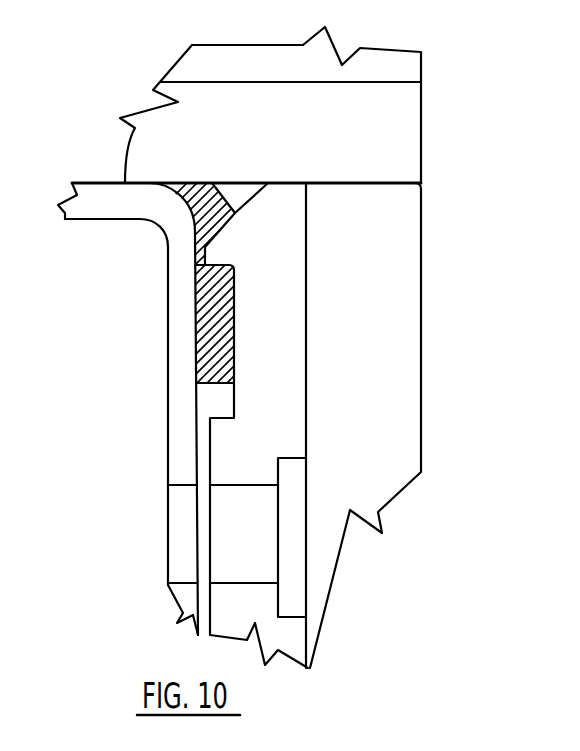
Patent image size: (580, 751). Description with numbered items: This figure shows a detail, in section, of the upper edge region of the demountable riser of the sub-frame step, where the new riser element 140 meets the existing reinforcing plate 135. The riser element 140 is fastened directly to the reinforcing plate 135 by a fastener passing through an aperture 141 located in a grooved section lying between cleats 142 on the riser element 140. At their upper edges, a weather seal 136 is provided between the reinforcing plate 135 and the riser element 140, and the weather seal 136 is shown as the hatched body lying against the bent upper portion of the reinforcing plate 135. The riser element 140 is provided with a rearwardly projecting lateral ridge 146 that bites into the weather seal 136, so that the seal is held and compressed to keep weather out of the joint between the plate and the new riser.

The reinforcing plate 135 is at (172, 365).
The weather seal 136 is at (207, 301).
The riser element 140 is at (427, 443).
The aperture 141 is at (255, 545).
The cleats 142 is at (403, 325).
The lateral ridge 146 is at (232, 248).